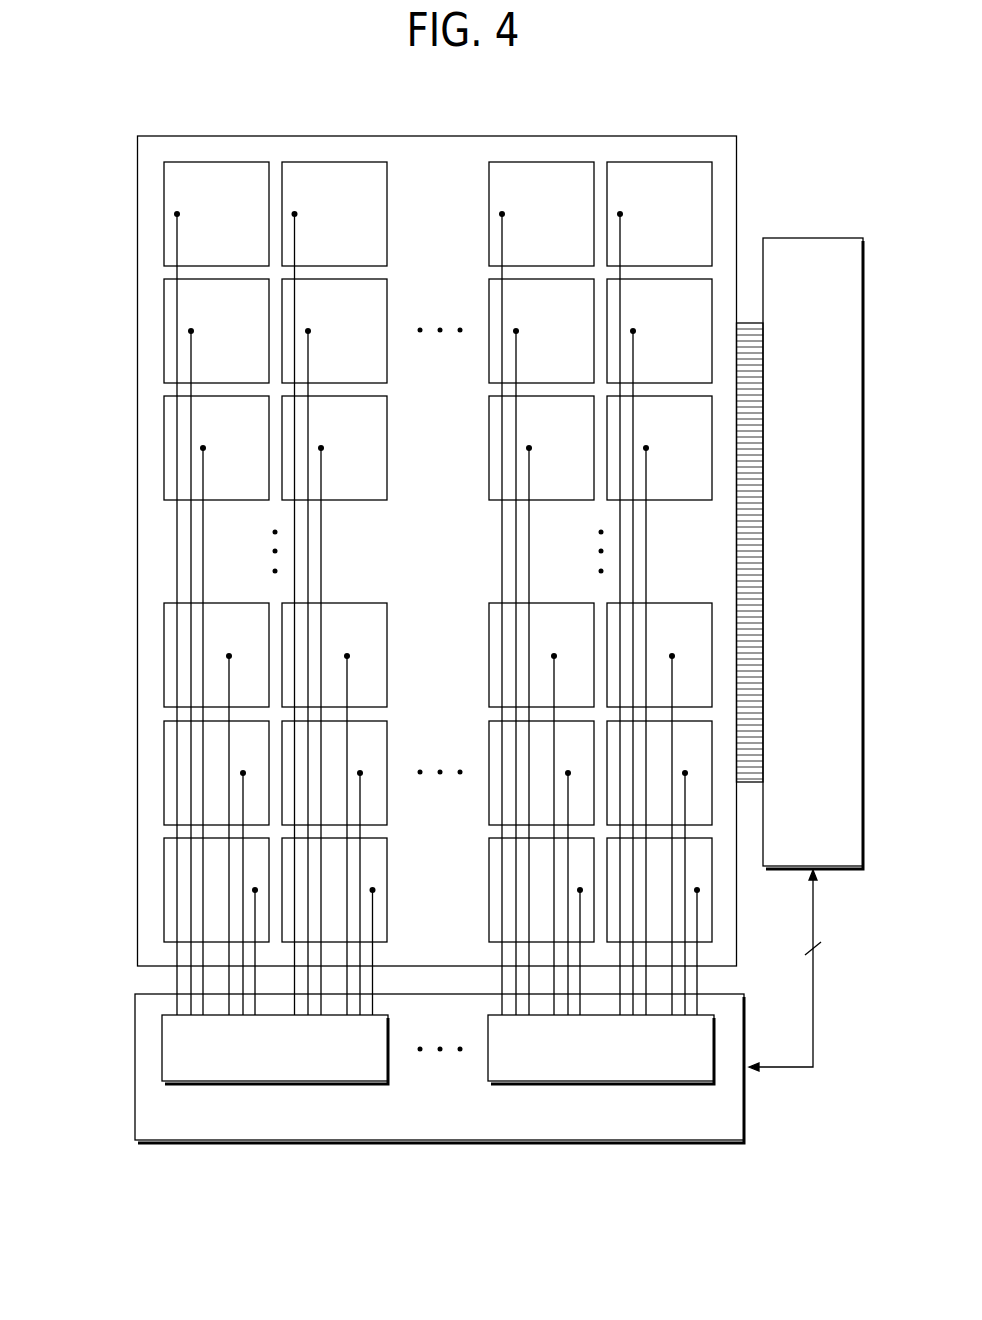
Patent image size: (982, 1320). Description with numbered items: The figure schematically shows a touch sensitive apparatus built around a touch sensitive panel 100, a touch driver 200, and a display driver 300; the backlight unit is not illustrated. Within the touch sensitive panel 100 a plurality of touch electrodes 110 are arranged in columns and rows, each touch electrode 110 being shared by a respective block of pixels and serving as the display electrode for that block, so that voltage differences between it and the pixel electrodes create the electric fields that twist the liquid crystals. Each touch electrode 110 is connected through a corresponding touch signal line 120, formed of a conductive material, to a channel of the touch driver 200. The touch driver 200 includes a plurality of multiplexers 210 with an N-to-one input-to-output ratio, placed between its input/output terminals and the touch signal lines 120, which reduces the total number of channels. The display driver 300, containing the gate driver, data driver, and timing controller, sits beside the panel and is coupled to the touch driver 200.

The touch sensitive panel 100 is at (137, 530).
The touch electrode 110 is at (202, 187).
The touch signal line 120 is at (178, 309).
The touch driver 200 is at (135, 1087).
The multiplexer 210 is at (162, 1037).
The display driver 300 is at (818, 238).